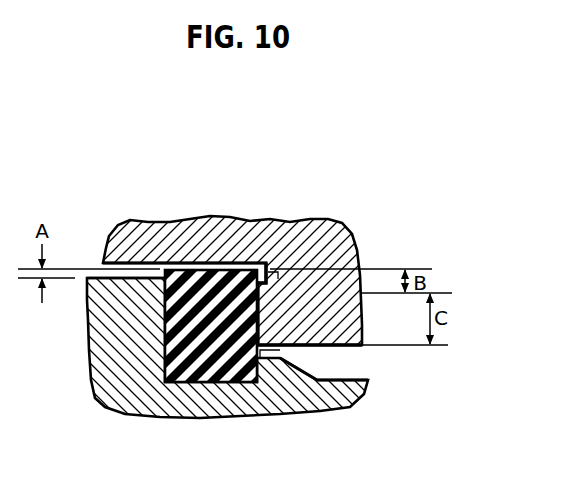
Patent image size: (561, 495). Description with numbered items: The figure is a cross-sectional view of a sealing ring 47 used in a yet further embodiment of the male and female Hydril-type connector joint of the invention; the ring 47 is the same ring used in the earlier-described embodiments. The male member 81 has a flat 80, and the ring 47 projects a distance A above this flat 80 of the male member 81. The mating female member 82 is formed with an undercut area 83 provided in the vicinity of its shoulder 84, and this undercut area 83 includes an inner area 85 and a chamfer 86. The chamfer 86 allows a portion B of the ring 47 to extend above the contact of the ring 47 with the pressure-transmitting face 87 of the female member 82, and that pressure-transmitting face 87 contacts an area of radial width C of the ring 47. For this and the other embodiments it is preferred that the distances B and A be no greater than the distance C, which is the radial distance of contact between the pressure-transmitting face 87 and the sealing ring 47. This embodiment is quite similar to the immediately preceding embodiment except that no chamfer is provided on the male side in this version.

The sealing ring 47 is at (196, 283).
The flat 80 is at (127, 276).
The male member 81 is at (118, 354).
The female member 82 is at (320, 228).
The undercut area 83 is at (259, 262).
The shoulder 84 is at (294, 265).
The inner area 85 is at (274, 266).
The chamfer 86 is at (315, 348).
The pressure-transmitting face 87 is at (262, 278).